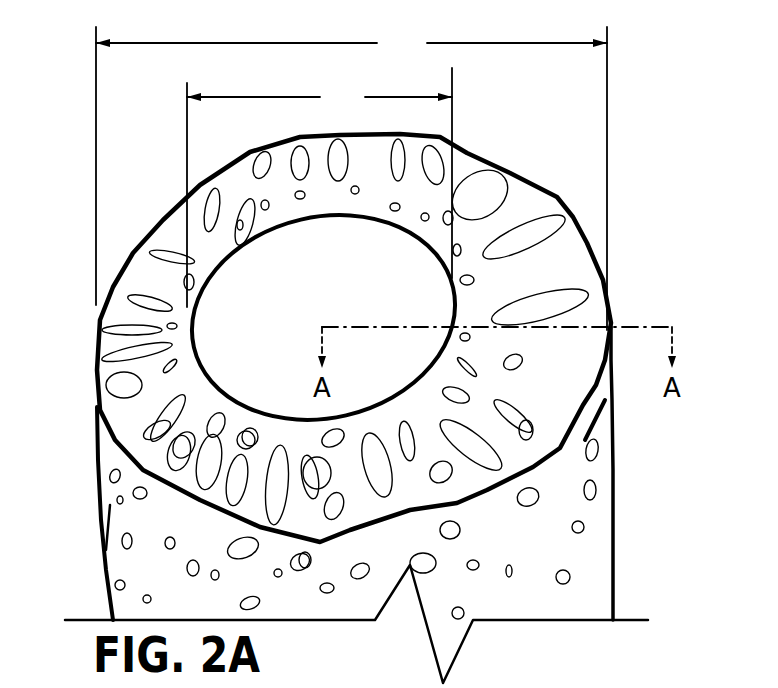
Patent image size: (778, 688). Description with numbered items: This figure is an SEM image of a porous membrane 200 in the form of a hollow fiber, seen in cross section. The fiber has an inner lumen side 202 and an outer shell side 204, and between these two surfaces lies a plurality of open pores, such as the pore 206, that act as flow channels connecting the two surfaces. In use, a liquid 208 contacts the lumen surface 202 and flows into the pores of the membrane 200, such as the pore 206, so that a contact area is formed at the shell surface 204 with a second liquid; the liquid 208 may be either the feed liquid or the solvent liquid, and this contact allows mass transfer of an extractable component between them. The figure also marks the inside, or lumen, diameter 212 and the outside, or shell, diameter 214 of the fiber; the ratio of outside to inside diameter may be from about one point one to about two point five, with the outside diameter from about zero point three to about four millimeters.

The porous membrane 200 is at (636, 141).
The lumen side 202 is at (420, 225).
The shell side 204 is at (292, 148).
The pore 206 is at (485, 455).
The liquid 208 is at (233, 372).
The inside diameter 212 is at (328, 88).
The outside diameter 214 is at (395, 35).